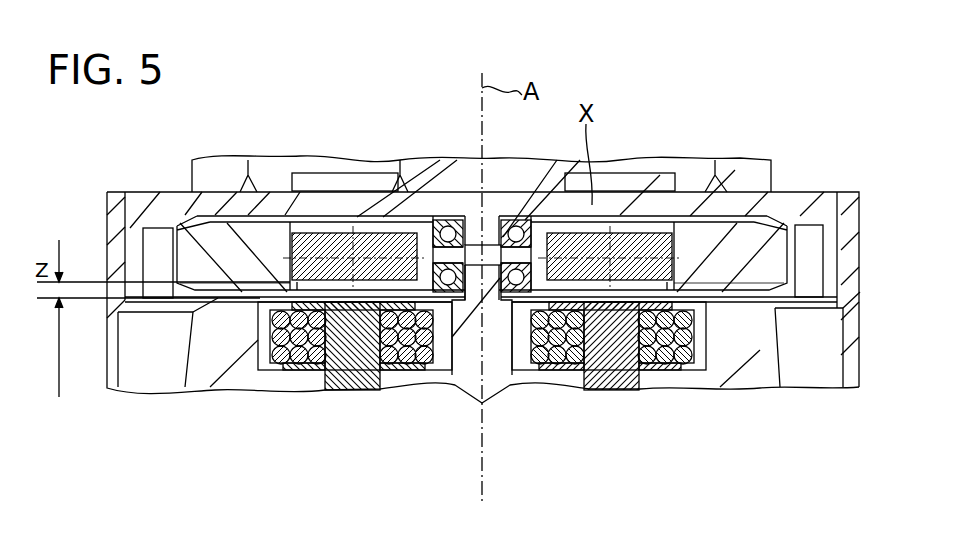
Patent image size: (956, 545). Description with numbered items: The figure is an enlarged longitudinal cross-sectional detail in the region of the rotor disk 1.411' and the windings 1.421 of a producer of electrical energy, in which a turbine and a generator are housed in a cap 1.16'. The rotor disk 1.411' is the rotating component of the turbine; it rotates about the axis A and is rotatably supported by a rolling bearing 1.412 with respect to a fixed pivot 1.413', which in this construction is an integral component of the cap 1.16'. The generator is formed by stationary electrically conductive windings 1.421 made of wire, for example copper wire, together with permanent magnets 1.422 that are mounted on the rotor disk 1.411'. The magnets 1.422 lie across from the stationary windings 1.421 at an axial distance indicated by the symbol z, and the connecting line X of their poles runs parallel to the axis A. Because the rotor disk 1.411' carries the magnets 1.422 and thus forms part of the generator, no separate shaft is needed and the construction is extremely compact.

The rotor disk 1.411' is at (457, 213).
The rolling bearing 1.412 is at (452, 222).
The pivot 1.413' is at (514, 192).
The windings 1.421 is at (484, 404).
The magnets 1.422 is at (335, 243).
The cap 1.16' is at (483, 263).